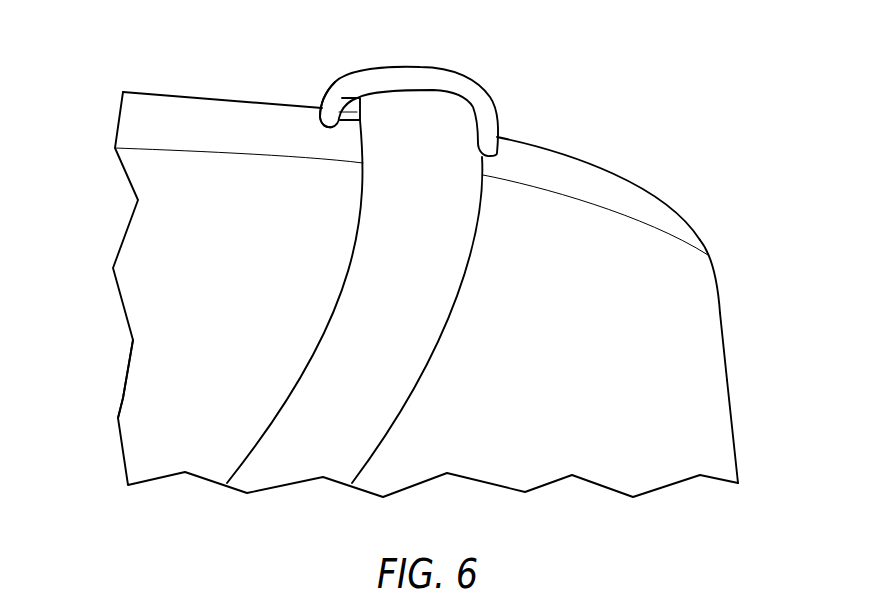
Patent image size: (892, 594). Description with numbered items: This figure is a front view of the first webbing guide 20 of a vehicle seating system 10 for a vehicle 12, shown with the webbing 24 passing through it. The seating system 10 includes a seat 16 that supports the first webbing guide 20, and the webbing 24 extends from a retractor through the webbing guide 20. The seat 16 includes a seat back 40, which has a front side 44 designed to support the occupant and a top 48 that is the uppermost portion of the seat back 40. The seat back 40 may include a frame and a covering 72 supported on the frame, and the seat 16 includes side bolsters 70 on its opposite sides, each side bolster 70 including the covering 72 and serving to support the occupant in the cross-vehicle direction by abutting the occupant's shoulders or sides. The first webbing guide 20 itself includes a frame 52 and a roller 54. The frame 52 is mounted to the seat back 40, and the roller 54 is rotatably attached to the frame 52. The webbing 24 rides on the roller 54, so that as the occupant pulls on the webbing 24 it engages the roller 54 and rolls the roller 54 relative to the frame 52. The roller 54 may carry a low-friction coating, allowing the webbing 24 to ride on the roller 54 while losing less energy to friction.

The vehicle seating system 10 is at (603, 52).
The vehicle 12 is at (657, 53).
The seat 16 is at (615, 185).
The first webbing guide 20 is at (467, 77).
The webbing 24 is at (408, 313).
The seat back 40 is at (700, 293).
The front side 44 is at (241, 271).
The top 48 is at (703, 348).
The frame 52 is at (347, 77).
The roller 54 is at (350, 123).
The side bolster 70 is at (732, 400).
The covering 72 is at (183, 377).